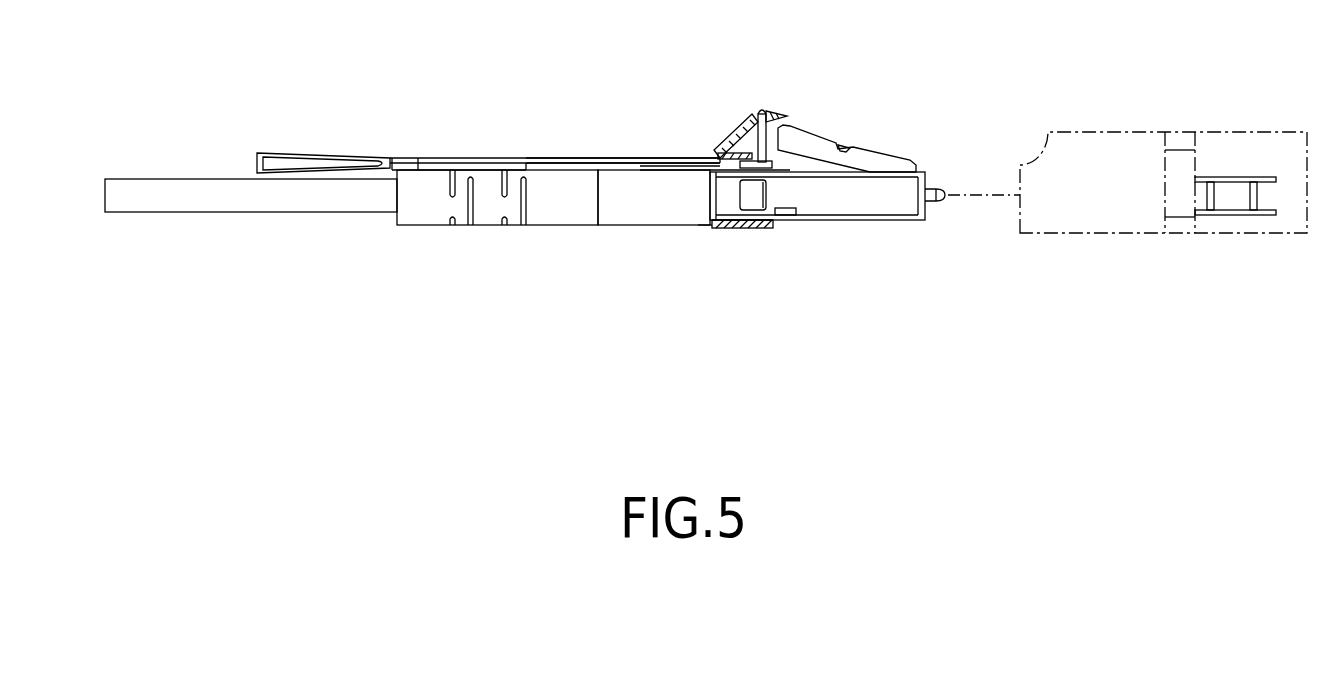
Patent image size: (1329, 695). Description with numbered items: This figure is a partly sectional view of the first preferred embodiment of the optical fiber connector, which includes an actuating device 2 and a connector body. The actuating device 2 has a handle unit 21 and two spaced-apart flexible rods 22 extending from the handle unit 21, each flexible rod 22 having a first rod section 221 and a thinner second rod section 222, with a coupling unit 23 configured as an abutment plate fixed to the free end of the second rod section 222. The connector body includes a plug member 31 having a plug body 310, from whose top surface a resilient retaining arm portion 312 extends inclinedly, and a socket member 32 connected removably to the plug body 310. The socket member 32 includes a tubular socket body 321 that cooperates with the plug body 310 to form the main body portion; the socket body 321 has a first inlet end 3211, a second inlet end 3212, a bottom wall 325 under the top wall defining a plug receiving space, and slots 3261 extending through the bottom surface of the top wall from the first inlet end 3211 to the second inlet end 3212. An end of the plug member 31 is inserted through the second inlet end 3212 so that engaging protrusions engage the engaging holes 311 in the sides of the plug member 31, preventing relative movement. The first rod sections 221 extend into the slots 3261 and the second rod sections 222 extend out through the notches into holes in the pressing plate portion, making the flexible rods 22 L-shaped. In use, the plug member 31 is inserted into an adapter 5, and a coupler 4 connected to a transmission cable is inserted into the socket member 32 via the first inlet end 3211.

The actuating device 2 is at (477, 125).
The handle unit 21 is at (328, 158).
The flexible rod 22 is at (735, 30).
The first rod section 221 is at (632, 156).
The second rod section 222 is at (737, 155).
The coupling unit 23 is at (765, 110).
The slot 3261 is at (716, 152).
The resilient retaining arm portion 312 is at (820, 130).
The plug member 31 is at (908, 236).
The engaging hole 311 is at (760, 190).
The second inlet end 3212 is at (783, 218).
The bottom wall 325 is at (728, 228).
The first inlet end 3211 is at (705, 222).
The socket body 321 is at (743, 252).
The socket member 32 is at (774, 267).
The plug body 310 is at (917, 208).
The coupler 4 is at (538, 242).
The adapter 5 is at (1104, 131).